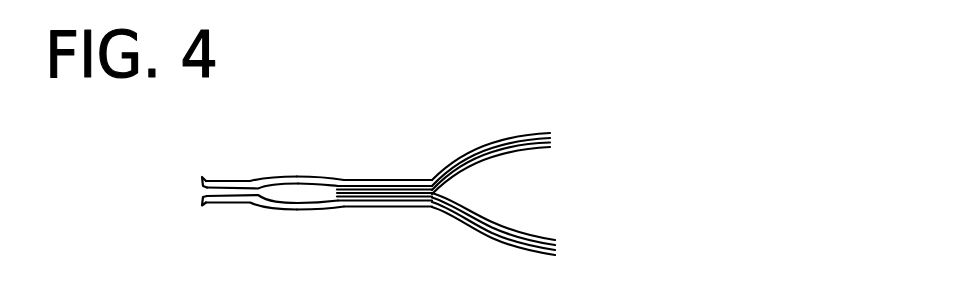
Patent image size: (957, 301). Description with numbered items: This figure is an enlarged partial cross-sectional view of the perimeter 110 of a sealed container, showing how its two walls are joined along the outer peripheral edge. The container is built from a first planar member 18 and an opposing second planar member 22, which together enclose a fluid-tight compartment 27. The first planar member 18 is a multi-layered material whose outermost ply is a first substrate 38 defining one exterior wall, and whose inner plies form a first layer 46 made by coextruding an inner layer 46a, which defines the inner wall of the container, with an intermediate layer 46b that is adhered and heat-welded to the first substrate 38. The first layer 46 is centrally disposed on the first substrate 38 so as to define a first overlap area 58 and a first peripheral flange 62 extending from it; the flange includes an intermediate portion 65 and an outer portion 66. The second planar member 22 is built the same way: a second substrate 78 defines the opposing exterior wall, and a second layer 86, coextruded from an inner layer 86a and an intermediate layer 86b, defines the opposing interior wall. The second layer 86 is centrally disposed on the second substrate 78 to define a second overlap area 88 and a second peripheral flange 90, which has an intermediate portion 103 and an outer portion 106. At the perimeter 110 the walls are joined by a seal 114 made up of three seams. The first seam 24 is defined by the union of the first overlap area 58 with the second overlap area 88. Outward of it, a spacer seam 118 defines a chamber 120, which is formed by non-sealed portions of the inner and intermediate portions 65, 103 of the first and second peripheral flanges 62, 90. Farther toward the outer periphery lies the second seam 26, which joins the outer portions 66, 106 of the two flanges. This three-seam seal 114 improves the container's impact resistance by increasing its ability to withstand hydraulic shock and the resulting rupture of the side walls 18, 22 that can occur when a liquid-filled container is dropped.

The perimeter 110 is at (414, 59).
The seal 114 is at (315, 107).
The spacer seam 118 is at (296, 165).
The intermediate portion 103 is at (307, 208).
The chamber 120 is at (280, 197).
The second seam 26 is at (247, 180).
The outer portion 66 is at (222, 178).
The outer portion 106 is at (225, 205).
The intermediate portion 65 is at (292, 169).
The first peripheral flange 62 is at (325, 170).
The first seam 24 is at (368, 174).
The first overlap area 58 is at (396, 183).
The second peripheral flange 90 is at (336, 211).
The second overlap area 88 is at (393, 205).
The first planar member 18 is at (516, 130).
The second planar member 22 is at (523, 258).
The first substrate 38 is at (550, 138).
The first layer 46 is at (552, 147).
The inner layer 46a is at (550, 148).
The intermediate layer 46b is at (550, 138).
The fluid-tight compartment 27 is at (545, 180).
The second layer 86 is at (557, 240).
The inner layer 86a is at (503, 225).
The intermediate layer 86b is at (559, 246).
The second substrate 78 is at (556, 250).